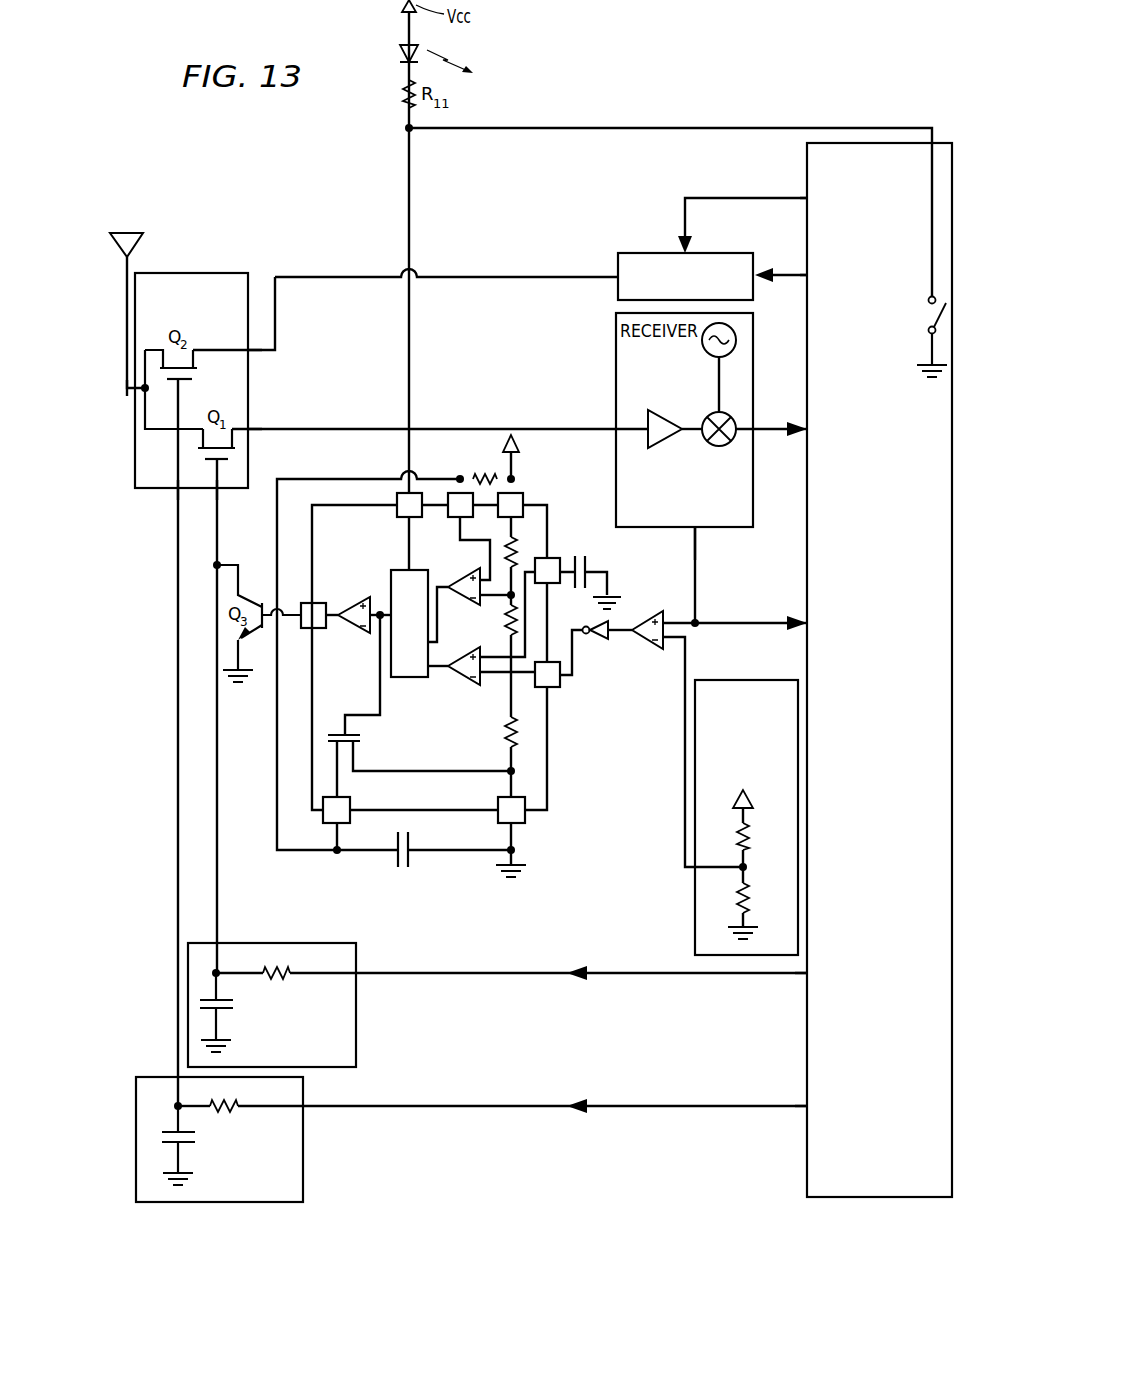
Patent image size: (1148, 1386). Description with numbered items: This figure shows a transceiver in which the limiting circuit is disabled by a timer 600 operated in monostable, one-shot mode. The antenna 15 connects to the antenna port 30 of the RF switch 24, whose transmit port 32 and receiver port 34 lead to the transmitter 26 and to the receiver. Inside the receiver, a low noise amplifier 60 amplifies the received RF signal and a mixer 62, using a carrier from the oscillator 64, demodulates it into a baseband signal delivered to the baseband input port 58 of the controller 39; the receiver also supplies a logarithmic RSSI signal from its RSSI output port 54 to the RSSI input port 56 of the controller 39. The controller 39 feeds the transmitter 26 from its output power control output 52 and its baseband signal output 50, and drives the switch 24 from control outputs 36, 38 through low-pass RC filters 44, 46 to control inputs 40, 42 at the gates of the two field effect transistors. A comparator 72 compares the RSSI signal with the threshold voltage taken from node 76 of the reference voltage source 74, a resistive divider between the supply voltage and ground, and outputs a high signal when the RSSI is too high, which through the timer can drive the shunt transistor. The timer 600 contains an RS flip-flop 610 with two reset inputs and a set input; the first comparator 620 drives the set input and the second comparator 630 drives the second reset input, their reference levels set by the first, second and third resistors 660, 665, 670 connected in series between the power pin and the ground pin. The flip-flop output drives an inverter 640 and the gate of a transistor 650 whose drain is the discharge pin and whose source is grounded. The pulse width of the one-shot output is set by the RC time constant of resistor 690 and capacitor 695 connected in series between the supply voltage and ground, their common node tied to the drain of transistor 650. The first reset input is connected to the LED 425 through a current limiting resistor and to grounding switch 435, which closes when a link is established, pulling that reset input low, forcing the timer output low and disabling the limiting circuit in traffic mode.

The antenna 15 is at (125, 230).
The switch 24 is at (186, 272).
The transmitter 26 is at (755, 258).
The antenna port 30 is at (142, 392).
The transmit port 32 is at (250, 354).
The receiver port 34 is at (250, 427).
The control output 36 is at (805, 977).
The control output 38 is at (805, 1110).
The controller 39 is at (944, 142).
The control input 40 is at (220, 492).
The control input 42 is at (176, 492).
The low-pass RC filter 44 is at (358, 1032).
The low-pass RC filter 46 is at (305, 1152).
The baseband signal output 50 is at (806, 280).
The output power control output 52 is at (806, 195).
The RSSI output port 54 is at (694, 533).
The RSSI input port 56 is at (804, 618).
The baseband input port 58 is at (804, 434).
The low noise amplifier 60 is at (660, 447).
The mixer 62 is at (718, 447).
The oscillator 64 is at (705, 347).
The comparator 72 is at (643, 648).
The reference voltage source 74 is at (730, 793).
The node 76 is at (748, 866).
The light emitting diode 425 is at (400, 53).
The switch 435 is at (929, 325).
The timer 600 is at (280, 482).
The RS flip-flop 610 is at (397, 568).
The first comparator 620 is at (457, 678).
The second comparator 630 is at (460, 580).
The inverter 640 is at (360, 604).
The transistor 650 is at (334, 733).
The first resistor 660 is at (516, 556).
The second resistor 665 is at (506, 626).
The third resistor 670 is at (506, 732).
The resistor 690 is at (487, 470).
The capacitor 695 is at (396, 862).